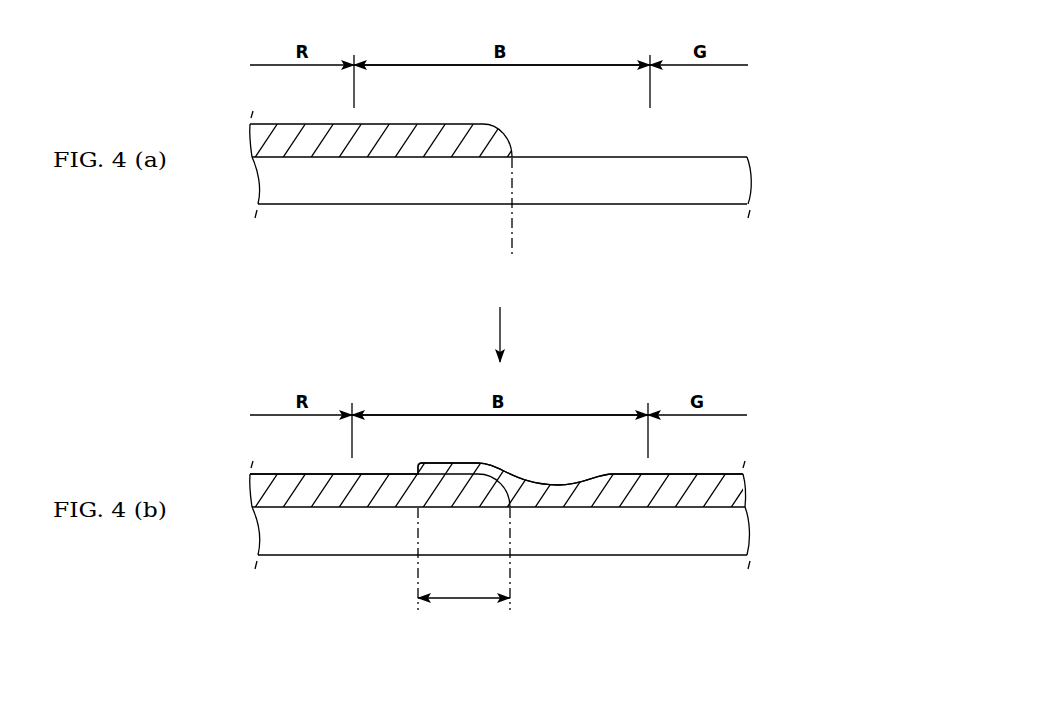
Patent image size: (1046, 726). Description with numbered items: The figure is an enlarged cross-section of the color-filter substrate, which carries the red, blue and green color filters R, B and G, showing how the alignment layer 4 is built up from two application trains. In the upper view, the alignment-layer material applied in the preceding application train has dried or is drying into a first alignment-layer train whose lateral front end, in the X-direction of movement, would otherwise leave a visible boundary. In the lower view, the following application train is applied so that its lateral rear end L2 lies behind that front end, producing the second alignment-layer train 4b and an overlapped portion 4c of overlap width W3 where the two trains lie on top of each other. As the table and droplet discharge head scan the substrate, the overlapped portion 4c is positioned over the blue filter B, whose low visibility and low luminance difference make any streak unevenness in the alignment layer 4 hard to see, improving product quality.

The alignment layer 4 is at (697, 455).
The alignment-layer train 4b is at (730, 487).
The overlapped portion 4c is at (477, 471).
The lateral rear end L2 is at (412, 573).
The overlap width W3 is at (464, 585).